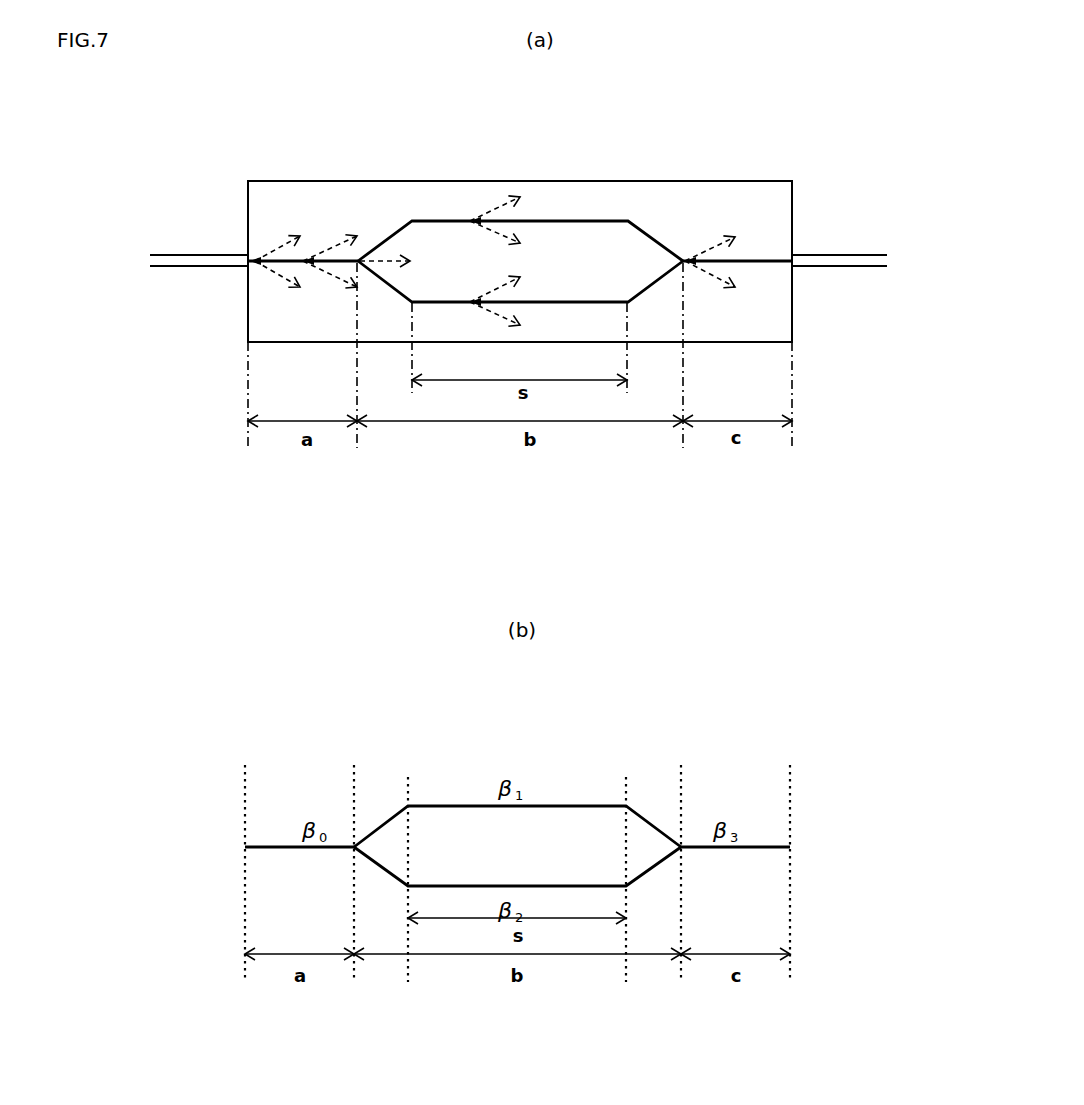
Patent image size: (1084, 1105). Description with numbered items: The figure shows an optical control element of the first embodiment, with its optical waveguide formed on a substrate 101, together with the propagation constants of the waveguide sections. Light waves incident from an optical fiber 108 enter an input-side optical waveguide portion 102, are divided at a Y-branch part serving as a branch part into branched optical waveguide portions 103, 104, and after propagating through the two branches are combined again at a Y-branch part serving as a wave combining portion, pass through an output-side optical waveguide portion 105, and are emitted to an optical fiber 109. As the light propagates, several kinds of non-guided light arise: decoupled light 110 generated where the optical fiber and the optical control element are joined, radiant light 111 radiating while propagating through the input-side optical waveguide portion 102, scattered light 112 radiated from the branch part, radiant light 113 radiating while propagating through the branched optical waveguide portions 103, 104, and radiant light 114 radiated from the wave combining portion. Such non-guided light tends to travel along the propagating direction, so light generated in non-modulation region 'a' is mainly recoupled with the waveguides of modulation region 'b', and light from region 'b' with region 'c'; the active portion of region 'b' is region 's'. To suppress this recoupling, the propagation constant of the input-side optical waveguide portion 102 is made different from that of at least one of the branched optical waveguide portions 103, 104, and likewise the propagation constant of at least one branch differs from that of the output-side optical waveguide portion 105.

The substrate 101 is at (657, 208).
The input-side optical waveguide portion 102 is at (295, 258).
The branched optical waveguide portion 103 is at (438, 220).
The branched optical waveguide portion 104 is at (568, 298).
The output-side optical waveguide portion 105 is at (755, 262).
The optical fiber 108 is at (183, 267).
The optical fiber 109 is at (868, 267).
The decoupled light 110 is at (280, 250).
The radiant light 111 is at (336, 238).
The scattered light 112 is at (385, 258).
The radiant light 113 is at (502, 200).
The radiant light 114 is at (718, 237).